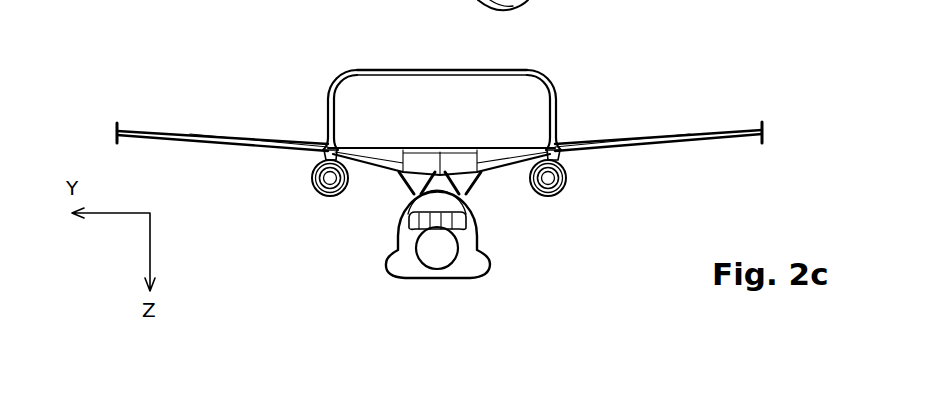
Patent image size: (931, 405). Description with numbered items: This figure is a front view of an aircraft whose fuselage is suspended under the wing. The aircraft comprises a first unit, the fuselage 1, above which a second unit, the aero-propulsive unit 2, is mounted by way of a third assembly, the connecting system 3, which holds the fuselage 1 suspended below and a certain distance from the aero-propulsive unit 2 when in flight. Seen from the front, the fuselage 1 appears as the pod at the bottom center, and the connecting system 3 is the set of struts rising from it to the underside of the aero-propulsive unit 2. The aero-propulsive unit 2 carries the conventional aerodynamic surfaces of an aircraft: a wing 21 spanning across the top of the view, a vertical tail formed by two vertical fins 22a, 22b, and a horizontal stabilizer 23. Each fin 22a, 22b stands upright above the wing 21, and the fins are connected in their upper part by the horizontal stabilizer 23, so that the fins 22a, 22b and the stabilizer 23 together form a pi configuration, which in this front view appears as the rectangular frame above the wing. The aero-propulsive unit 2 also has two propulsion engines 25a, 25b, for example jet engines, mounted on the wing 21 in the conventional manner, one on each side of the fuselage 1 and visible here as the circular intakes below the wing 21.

The fuselage 1 is at (497, 264).
The aero-propulsive unit 2 is at (620, 114).
The connecting system 3 is at (478, 187).
The wing 21 is at (223, 138).
The vertical fin 22a is at (327, 119).
The vertical fin 22b is at (557, 114).
The horizontal stabilizer 23 is at (407, 73).
The propulsion engine 25a is at (312, 178).
The propulsion engine 25b is at (566, 184).